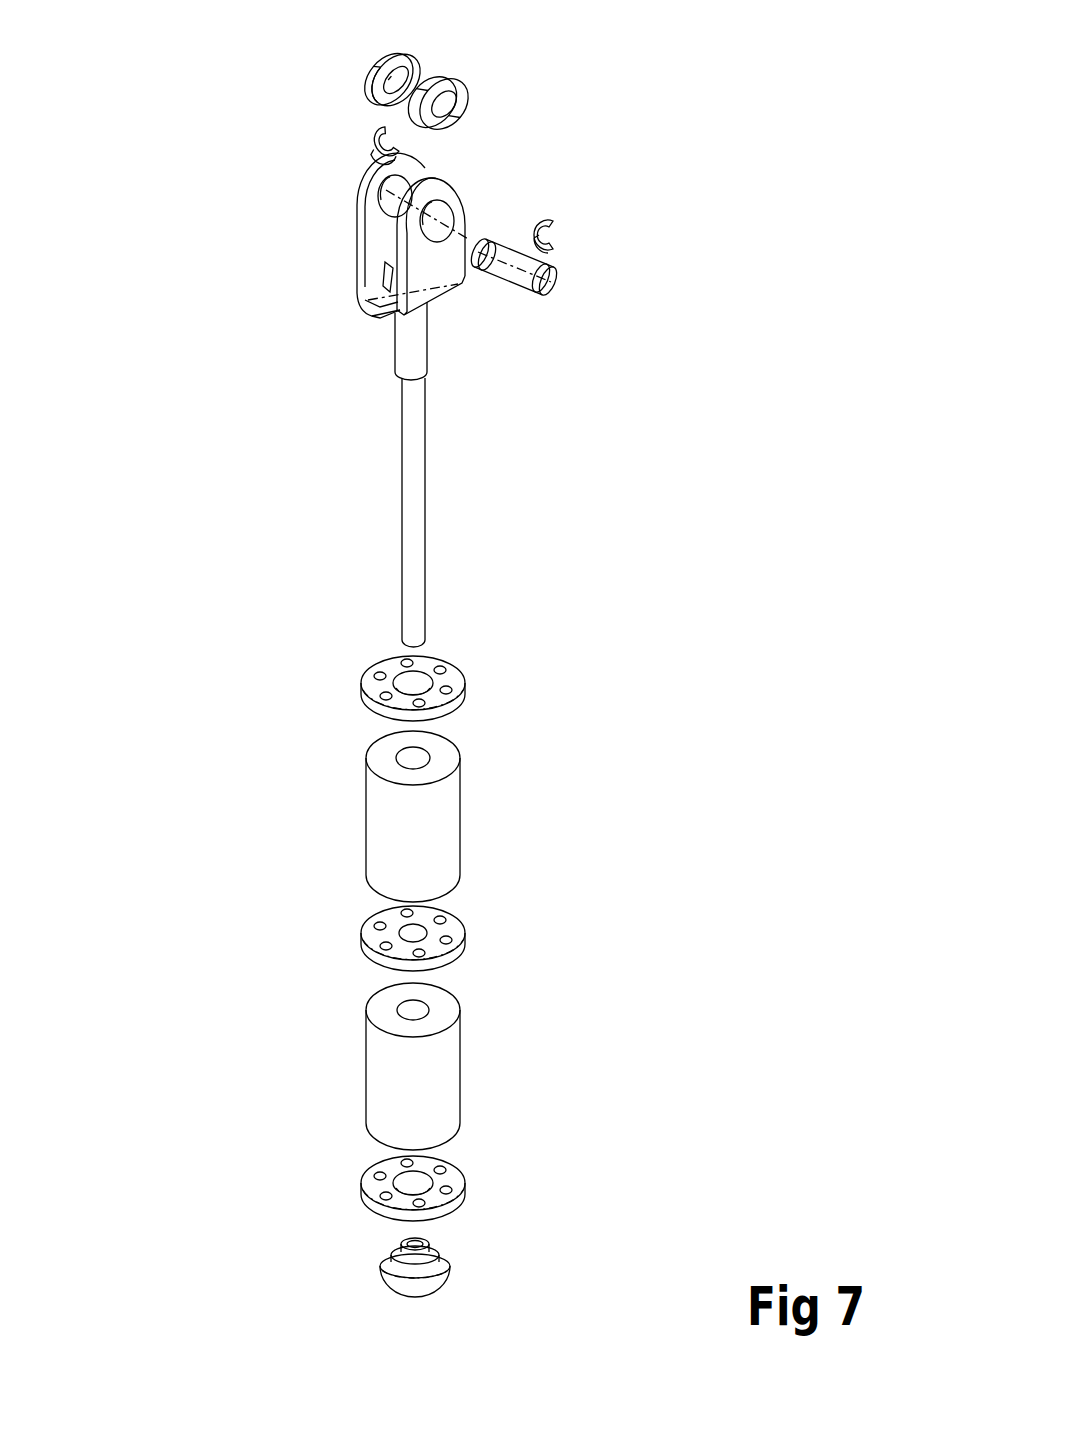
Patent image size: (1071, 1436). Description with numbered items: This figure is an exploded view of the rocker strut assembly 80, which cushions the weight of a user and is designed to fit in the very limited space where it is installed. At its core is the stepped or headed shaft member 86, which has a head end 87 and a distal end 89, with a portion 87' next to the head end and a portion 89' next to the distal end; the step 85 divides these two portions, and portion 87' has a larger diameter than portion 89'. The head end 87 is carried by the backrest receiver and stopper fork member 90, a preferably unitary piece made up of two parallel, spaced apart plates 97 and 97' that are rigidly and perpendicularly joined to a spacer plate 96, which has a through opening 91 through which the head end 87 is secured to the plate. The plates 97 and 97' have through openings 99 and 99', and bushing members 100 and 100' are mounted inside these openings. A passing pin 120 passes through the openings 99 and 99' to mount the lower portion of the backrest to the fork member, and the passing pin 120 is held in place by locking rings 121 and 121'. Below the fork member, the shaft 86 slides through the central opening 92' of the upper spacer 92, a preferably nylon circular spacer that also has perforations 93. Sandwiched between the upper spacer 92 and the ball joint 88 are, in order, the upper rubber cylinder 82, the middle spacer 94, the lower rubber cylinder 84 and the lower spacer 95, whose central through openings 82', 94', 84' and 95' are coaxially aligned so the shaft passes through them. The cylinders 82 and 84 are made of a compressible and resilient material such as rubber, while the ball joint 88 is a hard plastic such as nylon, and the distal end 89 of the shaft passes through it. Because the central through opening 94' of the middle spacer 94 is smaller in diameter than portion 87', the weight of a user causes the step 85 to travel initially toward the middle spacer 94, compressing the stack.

The rocker strut assembly 80 is at (523, 575).
The upper rubber cylinder 82 is at (502, 816).
The central through opening of upper rubber cylinder 82' is at (517, 780).
The lower rubber cylinder 84 is at (518, 1066).
The central through opening of lower rubber cylinder 84' is at (534, 1024).
The step 85 is at (412, 378).
The stepped or headed shaft member 86 is at (423, 477).
The head end 87 is at (364, 239).
The portion next to head end 87' is at (320, 395).
The ball joint 88 is at (430, 1280).
The distal end 89 is at (343, 606).
The portion next to distal end 89' is at (315, 514).
The backrest receiver and stopper fork member 90 is at (583, 237).
The through opening 91 is at (385, 290).
The upper spacer 92 is at (504, 669).
The central opening of upper spacer 92' is at (520, 714).
The perforations 93 is at (440, 668).
The middle spacer 94 is at (490, 934).
The central through opening of middle spacer 94' is at (509, 910).
The lower spacer 95 is at (493, 1188).
The central through opening of lower spacer 95' is at (509, 1160).
The spacer plate 96 is at (362, 308).
The plate 97 is at (488, 202).
The plate 97' is at (330, 207).
The through opening 99 is at (500, 189).
The through opening 99' is at (323, 201).
The bushing member 100 is at (488, 83).
The bushing member 100' is at (322, 63).
The passing pin 120 is at (538, 265).
The locking ring 121 is at (652, 223).
The locking ring 121' is at (261, 109).